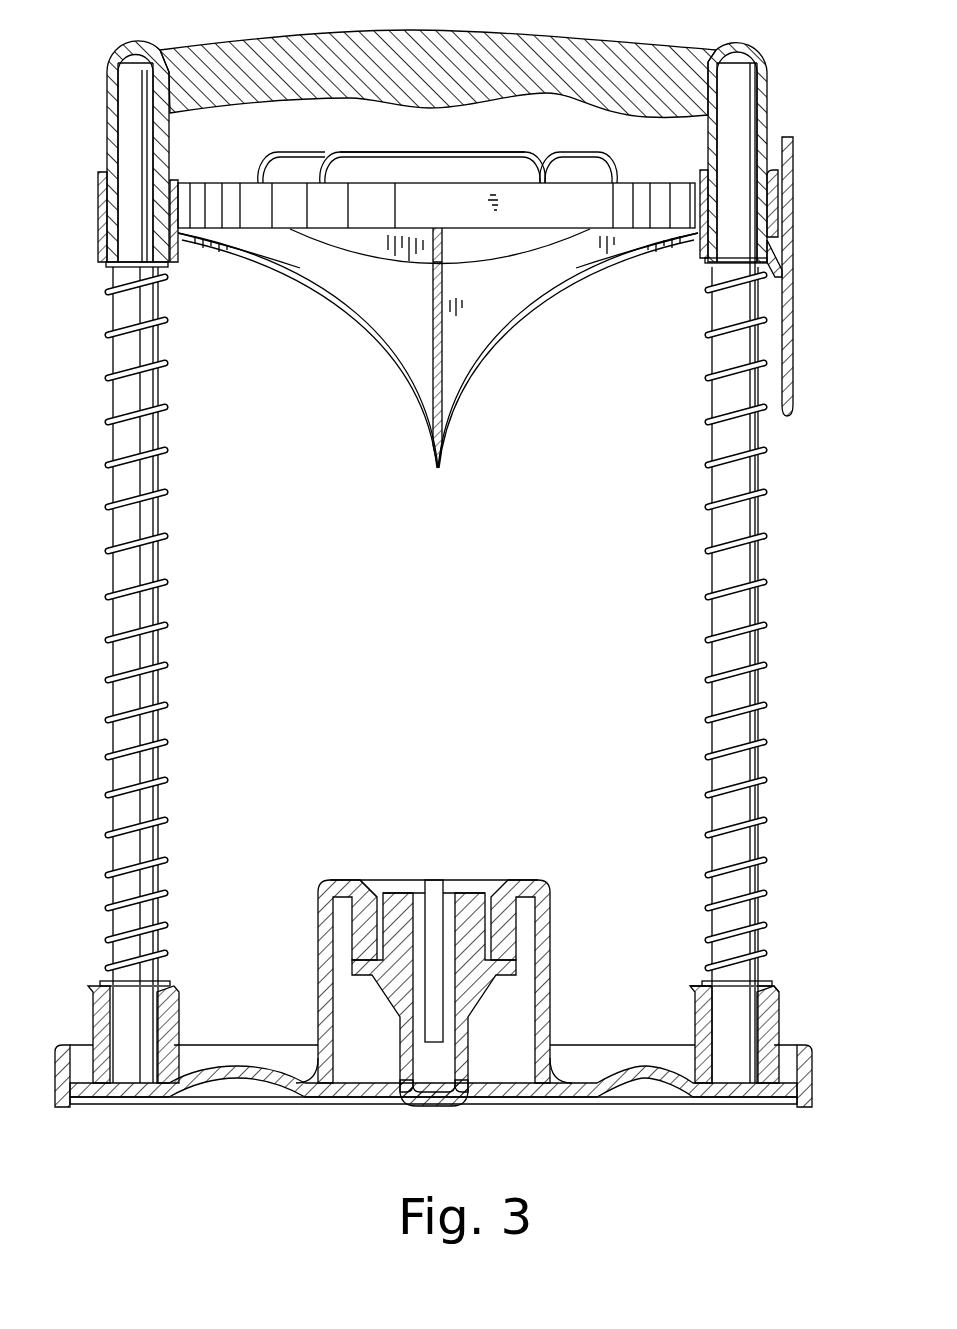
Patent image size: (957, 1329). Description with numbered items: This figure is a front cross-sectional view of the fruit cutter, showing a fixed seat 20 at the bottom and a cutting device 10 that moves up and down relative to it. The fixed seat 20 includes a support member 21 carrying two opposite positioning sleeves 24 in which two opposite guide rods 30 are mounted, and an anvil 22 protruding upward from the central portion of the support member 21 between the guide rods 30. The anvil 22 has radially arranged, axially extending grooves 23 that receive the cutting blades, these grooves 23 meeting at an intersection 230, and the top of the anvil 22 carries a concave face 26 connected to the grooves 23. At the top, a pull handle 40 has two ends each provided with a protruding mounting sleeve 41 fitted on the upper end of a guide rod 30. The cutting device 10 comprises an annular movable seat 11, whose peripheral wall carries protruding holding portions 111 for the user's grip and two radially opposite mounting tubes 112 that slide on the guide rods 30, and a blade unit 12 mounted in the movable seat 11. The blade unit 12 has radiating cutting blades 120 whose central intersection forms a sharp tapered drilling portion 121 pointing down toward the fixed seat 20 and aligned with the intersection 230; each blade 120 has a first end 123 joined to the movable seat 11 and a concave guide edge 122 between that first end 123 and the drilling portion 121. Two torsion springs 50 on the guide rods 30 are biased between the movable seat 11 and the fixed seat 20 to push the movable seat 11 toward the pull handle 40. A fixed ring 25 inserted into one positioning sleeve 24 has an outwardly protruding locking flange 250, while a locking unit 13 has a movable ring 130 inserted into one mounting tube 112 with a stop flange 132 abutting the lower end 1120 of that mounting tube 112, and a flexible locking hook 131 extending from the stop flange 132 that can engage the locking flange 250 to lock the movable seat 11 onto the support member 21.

The pull handle 40 is at (452, 31).
The mounting sleeve 41 is at (769, 97).
The cutting device 10 is at (263, 154).
The holding portion 111 is at (446, 161).
The movable seat 11 is at (655, 181).
The mounting tube 112 is at (780, 175).
The movable ring 130 is at (773, 210).
The locking unit 13 is at (815, 276).
The locking hook 131 is at (794, 326).
The lower end of mounting tube 1120 is at (784, 266).
The blade unit 12 is at (438, 348).
The cutting blade 120 is at (534, 274).
The drilling portion 121 is at (426, 436).
The concave guide edge 122 is at (339, 292).
The first end 123 is at (244, 249).
The stop flange 132 is at (693, 261).
The torsion spring 50 is at (755, 460).
The guide rod 30 is at (721, 568).
The anvil 22 is at (415, 954).
The concave face 26 is at (367, 884).
The groove 23 is at (478, 889).
The intersection 230 is at (435, 897).
The fixed seat 20 is at (447, 1023).
The support member 21 is at (584, 1050).
The positioning sleeve 24 is at (775, 1032).
The fixed ring 25 is at (740, 1011).
The locking flange 250 is at (775, 988).